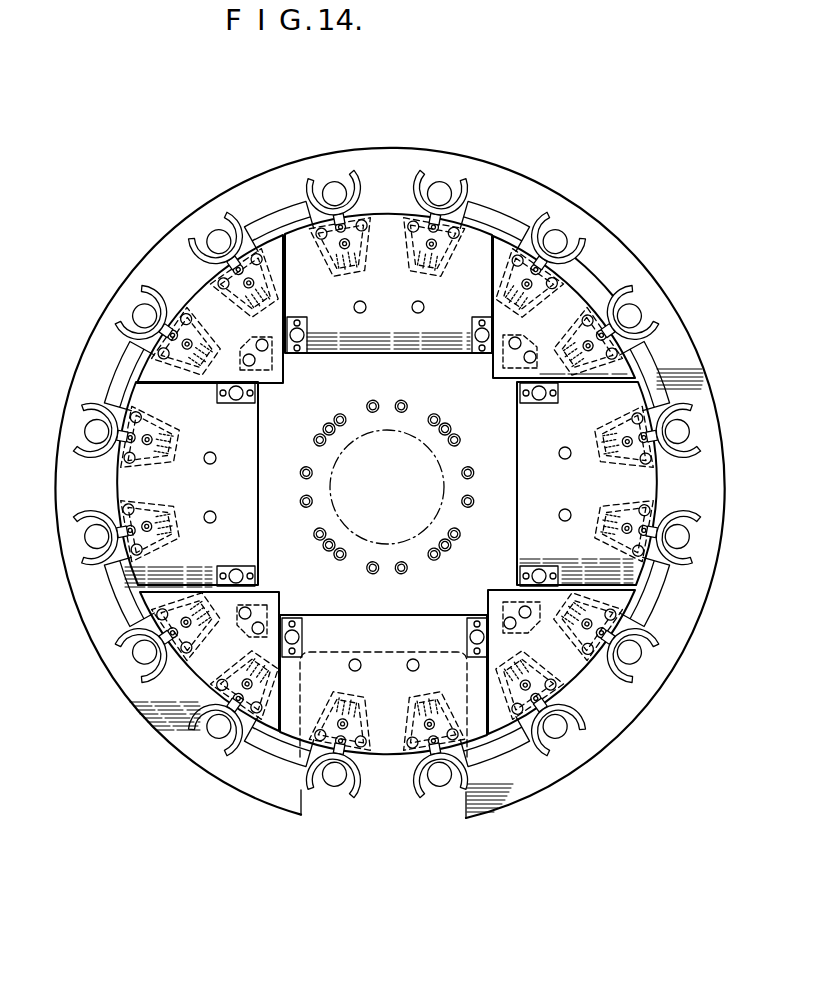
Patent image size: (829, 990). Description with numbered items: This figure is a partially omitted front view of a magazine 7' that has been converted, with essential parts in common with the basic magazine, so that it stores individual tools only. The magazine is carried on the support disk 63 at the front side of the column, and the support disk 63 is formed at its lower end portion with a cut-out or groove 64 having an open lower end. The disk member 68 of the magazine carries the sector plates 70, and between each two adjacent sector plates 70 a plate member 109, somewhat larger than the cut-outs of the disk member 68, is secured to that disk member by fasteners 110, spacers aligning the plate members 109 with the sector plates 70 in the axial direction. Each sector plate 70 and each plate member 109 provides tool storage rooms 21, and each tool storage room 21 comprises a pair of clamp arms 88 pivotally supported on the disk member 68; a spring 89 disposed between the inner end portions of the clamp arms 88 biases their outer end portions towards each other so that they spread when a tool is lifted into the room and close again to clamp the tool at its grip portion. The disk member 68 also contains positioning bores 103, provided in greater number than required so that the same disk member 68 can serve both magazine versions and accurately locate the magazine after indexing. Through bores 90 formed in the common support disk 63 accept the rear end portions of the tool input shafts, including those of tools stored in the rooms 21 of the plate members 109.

The magazine 7' is at (393, 484).
The tool storage room 21 is at (306, 182).
The support disk 63 is at (655, 677).
The cut-out or groove 64 is at (467, 793).
The disk member 68 is at (183, 690).
The sector plate 70 is at (289, 328).
The clamp arm 88 is at (215, 265).
The spring 89 is at (250, 372).
The through bore 90 is at (230, 240).
The positioning bore 103 is at (437, 420).
The plate member 109 is at (470, 255).
The fastener 110 is at (303, 340).